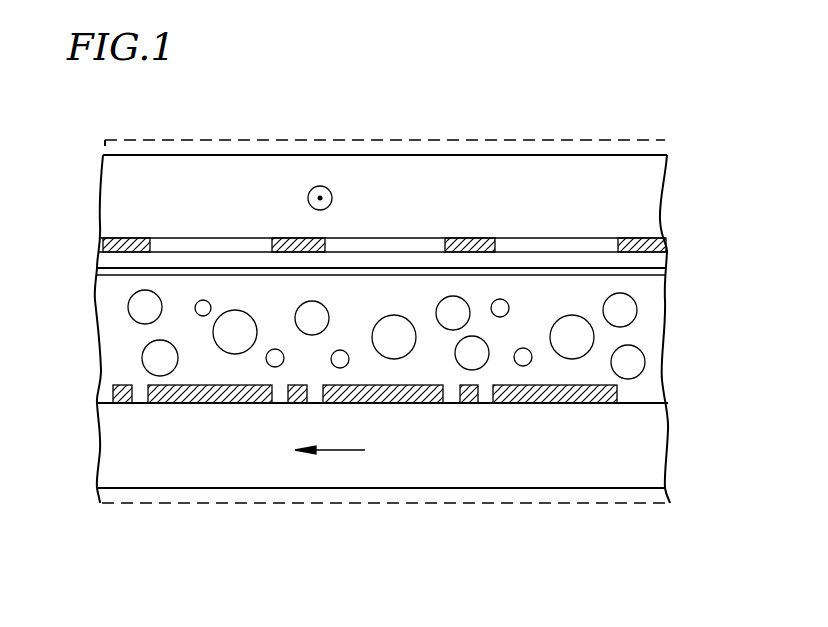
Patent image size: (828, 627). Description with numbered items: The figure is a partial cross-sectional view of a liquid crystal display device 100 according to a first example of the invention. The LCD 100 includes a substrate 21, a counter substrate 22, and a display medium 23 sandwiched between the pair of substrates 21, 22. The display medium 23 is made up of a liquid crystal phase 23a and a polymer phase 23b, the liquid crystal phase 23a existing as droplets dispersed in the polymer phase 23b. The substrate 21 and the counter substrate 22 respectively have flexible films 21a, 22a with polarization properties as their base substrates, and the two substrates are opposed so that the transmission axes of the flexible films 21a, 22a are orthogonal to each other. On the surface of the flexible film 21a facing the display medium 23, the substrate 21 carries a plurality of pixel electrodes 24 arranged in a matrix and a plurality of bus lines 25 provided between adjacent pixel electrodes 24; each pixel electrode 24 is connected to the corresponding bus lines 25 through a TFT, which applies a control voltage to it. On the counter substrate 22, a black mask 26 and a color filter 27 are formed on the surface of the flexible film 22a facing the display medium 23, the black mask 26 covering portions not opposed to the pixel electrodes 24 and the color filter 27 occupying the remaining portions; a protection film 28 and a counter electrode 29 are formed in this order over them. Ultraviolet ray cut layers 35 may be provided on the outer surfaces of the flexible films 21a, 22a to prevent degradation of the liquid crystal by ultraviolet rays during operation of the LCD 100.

The liquid crystal display device 100 is at (656, 94).
The substrate 21 is at (680, 392).
The flexible film 21a is at (543, 470).
The counter substrate 22 is at (680, 162).
The flexible film 22a is at (543, 178).
The display medium 23 is at (680, 277).
The liquid crystal phase 23a is at (160, 366).
The polymer phase 23b is at (278, 376).
The pixel electrode 24 is at (388, 405).
The bus line 25 is at (470, 396).
The black mask 26 is at (477, 238).
The color filter 27 is at (393, 250).
The protection film 28 is at (353, 262).
The counter electrode 29 is at (225, 272).
The ultraviolet ray cut layer 35 is at (595, 140).